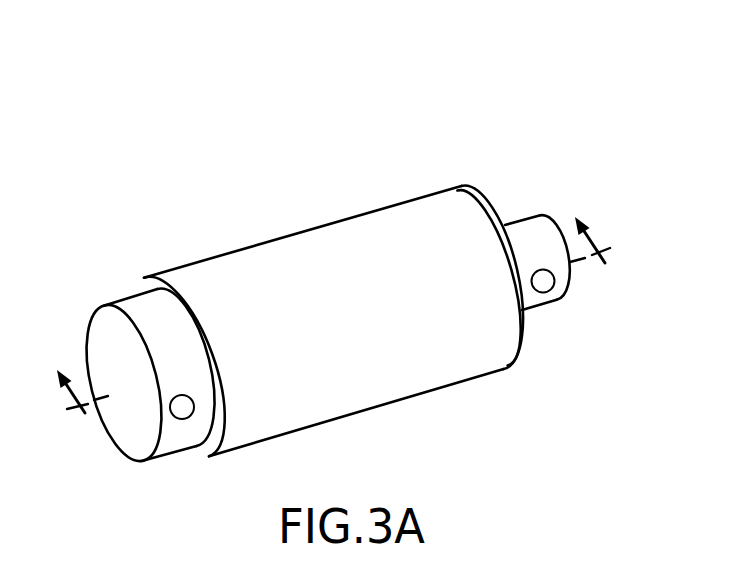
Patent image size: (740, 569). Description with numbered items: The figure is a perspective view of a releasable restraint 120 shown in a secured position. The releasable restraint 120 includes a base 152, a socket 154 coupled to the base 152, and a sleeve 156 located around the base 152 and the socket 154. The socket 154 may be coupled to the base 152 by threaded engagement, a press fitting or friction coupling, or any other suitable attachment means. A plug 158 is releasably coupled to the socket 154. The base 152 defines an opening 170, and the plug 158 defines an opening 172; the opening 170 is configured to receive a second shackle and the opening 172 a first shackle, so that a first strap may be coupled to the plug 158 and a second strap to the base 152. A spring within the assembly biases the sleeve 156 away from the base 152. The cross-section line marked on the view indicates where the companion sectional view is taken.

The releasable restraint 120 is at (323, 276).
The base 152 is at (138, 312).
The socket 154 is at (477, 197).
The sleeve 156 is at (363, 331).
The plug 158 is at (527, 235).
The opening 170 is at (546, 298).
The opening 172 is at (188, 430).